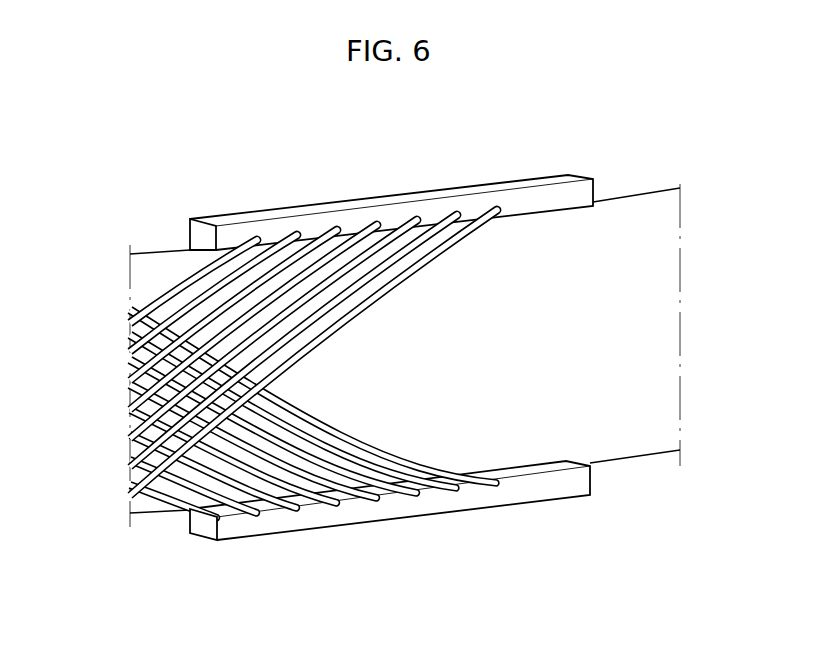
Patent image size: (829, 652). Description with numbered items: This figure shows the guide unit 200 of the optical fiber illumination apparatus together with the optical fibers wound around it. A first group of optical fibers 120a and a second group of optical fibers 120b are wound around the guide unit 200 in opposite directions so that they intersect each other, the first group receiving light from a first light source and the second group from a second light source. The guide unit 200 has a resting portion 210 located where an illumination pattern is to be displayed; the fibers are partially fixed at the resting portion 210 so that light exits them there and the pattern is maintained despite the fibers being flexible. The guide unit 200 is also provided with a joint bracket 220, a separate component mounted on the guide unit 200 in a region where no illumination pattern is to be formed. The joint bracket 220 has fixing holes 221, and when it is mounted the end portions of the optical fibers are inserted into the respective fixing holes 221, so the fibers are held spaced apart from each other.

The guide unit 200 is at (643, 186).
The resting portion 210 is at (277, 393).
The joint bracket 220 is at (492, 186).
The fixing holes 221 is at (377, 222).
The first group of optical fibers 120a is at (232, 277).
The second group of optical fibers 120b is at (180, 480).